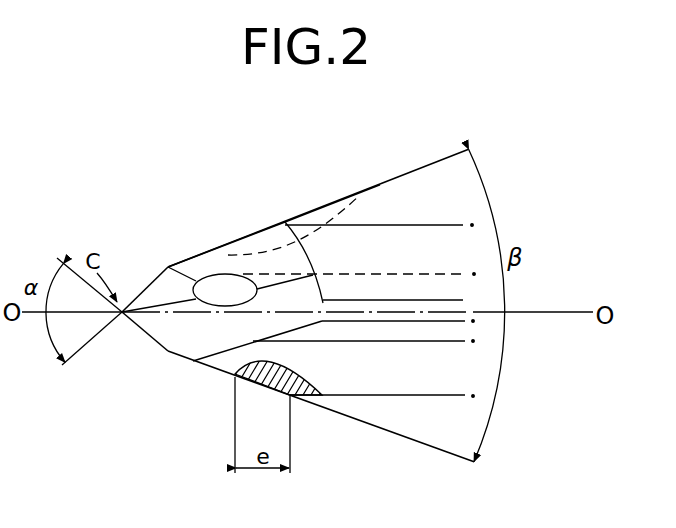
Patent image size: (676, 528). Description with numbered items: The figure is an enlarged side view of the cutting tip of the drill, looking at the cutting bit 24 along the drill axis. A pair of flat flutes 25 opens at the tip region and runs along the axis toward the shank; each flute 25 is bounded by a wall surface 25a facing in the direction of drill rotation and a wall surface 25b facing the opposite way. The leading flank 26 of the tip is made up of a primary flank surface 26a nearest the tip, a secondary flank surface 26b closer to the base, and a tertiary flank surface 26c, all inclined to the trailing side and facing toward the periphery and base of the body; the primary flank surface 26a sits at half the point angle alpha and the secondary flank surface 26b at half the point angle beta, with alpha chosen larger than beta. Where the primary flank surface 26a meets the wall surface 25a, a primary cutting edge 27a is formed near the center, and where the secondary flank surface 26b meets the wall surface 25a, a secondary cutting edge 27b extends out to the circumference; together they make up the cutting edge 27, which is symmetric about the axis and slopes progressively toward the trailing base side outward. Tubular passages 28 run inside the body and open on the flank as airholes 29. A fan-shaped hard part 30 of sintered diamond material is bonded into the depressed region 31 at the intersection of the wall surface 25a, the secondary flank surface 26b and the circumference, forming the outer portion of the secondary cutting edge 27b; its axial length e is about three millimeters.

The cutting bit 24 is at (412, 243).
The flute 25 is at (408, 378).
The wall surface 25a is at (383, 378).
The wall surface 25b is at (418, 333).
The leading flank 26 is at (162, 182).
The primary flank surface 26a is at (170, 285).
The secondary flank surface 26b is at (229, 252).
The tertiary flank surface 26c is at (292, 295).
The cutting edge 27 is at (140, 432).
The primary cutting edge 27a is at (138, 287).
The secondary cutting edge 27b is at (200, 253).
The tubular passage 28 is at (430, 287).
The airhole 29 is at (231, 305).
The hard part 30 is at (347, 203).
The depressed region 31 is at (452, 305).